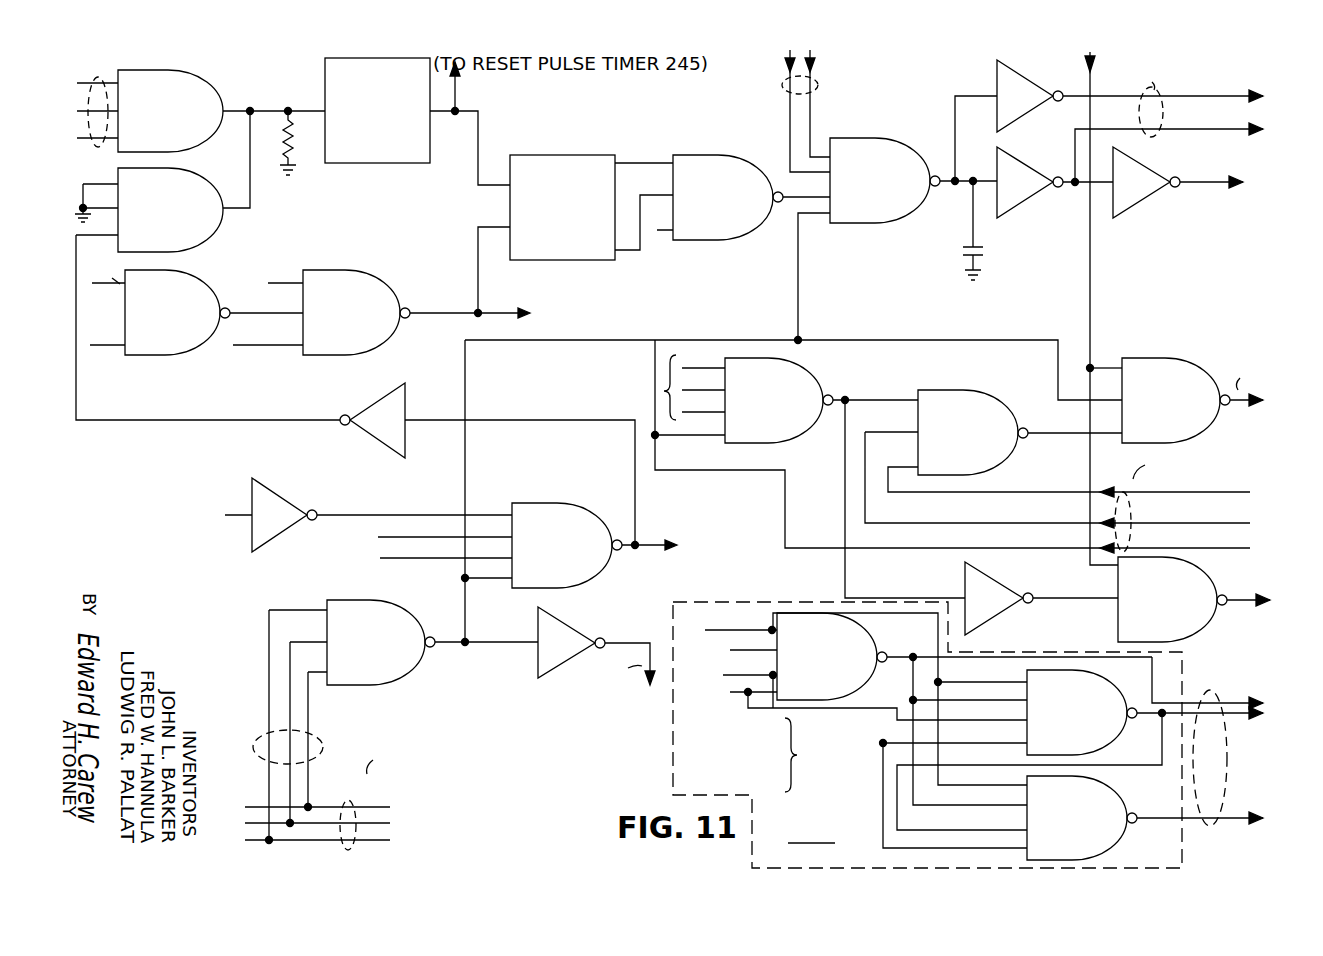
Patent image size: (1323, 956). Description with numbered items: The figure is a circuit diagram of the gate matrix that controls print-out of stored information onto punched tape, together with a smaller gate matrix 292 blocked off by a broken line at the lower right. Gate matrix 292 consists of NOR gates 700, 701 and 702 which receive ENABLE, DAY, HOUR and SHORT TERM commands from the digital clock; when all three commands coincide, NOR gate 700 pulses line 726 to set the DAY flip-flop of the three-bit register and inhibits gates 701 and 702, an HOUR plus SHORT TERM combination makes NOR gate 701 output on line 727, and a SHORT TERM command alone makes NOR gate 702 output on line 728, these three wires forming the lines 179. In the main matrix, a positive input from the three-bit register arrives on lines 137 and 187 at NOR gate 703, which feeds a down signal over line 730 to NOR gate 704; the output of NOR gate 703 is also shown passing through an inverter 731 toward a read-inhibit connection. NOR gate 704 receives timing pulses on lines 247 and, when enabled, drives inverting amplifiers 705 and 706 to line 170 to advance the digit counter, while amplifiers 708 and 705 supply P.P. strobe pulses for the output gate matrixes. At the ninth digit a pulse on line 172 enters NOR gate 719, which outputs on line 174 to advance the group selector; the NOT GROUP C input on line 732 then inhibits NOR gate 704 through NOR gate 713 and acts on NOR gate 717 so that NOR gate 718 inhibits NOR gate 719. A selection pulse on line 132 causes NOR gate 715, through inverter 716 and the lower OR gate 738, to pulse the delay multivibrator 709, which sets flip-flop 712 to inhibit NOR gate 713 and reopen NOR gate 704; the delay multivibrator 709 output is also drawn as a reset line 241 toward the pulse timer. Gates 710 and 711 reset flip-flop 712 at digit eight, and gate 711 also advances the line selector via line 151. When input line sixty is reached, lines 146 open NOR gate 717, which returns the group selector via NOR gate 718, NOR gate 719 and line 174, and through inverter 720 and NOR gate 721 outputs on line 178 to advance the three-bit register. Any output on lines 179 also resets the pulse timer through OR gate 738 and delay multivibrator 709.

The lines from gate matrix 292 179 is at (99, 77).
The OR gates 738 is at (198, 154).
The delay multivibrator 709 is at (365, 62).
The reset pulse line 241 is at (455, 100).
The NOR gate 710 is at (200, 277).
The NOR gate 711 is at (343, 275).
The line 151 is at (498, 312).
The flip-flop 712 is at (555, 159).
The NOR gate 713 is at (701, 159).
The lines 247 is at (819, 88).
The NOR gate 704 is at (865, 139).
The line 730 is at (803, 298).
The line 732 is at (781, 515).
The inverting amplifier 708 is at (1021, 84).
The inverting amplifier 705 is at (1020, 212).
The inverting amplifier 706 is at (1145, 174).
The line 170 is at (1212, 184).
The line 172 is at (1090, 77).
The inverter 716 is at (409, 397).
The line 132 is at (225, 509).
The NOR gate 715 is at (536, 511).
The NOR gate 717 is at (821, 387).
The lines 146 is at (664, 392).
The NOR gate 718 is at (998, 406).
The NOR gate 719 is at (1148, 353).
The line 174 is at (1238, 408).
The inverter 720 is at (986, 586).
The NOR gate 721 is at (1213, 586).
The line 178 is at (1232, 608).
The NOR gate 703 is at (416, 682).
The inverter 731 is at (576, 636).
The line 187 is at (318, 747).
The line 137 is at (358, 807).
The gate matrix 292 is at (998, 652).
The NOR gate 700 is at (875, 650).
The NOR gate 701 is at (1106, 689).
The NOR gate 702 is at (1126, 812).
The line 726 is at (1255, 708).
The line 727 is at (1232, 718).
The line 728 is at (1231, 820).